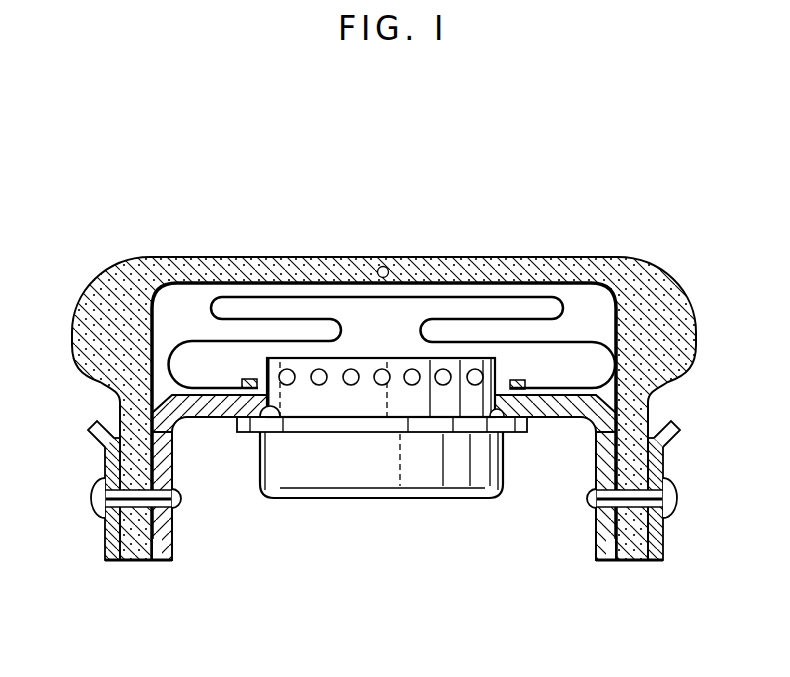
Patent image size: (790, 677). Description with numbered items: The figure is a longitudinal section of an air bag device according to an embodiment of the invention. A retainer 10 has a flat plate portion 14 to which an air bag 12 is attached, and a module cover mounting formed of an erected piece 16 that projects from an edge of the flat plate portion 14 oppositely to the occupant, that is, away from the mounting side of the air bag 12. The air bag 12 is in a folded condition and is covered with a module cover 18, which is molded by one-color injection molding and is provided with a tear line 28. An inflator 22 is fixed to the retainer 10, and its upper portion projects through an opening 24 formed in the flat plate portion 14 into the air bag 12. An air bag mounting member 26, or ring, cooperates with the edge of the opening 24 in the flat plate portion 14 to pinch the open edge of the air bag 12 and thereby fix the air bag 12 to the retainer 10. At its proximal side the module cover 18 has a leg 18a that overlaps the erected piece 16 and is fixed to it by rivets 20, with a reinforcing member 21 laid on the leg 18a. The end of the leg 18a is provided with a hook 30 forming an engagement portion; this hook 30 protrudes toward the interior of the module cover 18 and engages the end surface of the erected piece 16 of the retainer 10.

The retainer 10 is at (208, 419).
The air bag 12 is at (292, 296).
The flat plate portion 14 is at (536, 421).
The erected piece 16 is at (174, 538).
The module cover 18 is at (525, 257).
The leg 18a is at (131, 562).
The rivets 20 is at (181, 500).
The reinforcing member 21 is at (104, 462).
The inflator 22 is at (365, 499).
The opening 24 is at (276, 418).
The air bag mounting member 26 is at (525, 384).
The tear line 28 is at (383, 266).
The hook 30 is at (166, 562).